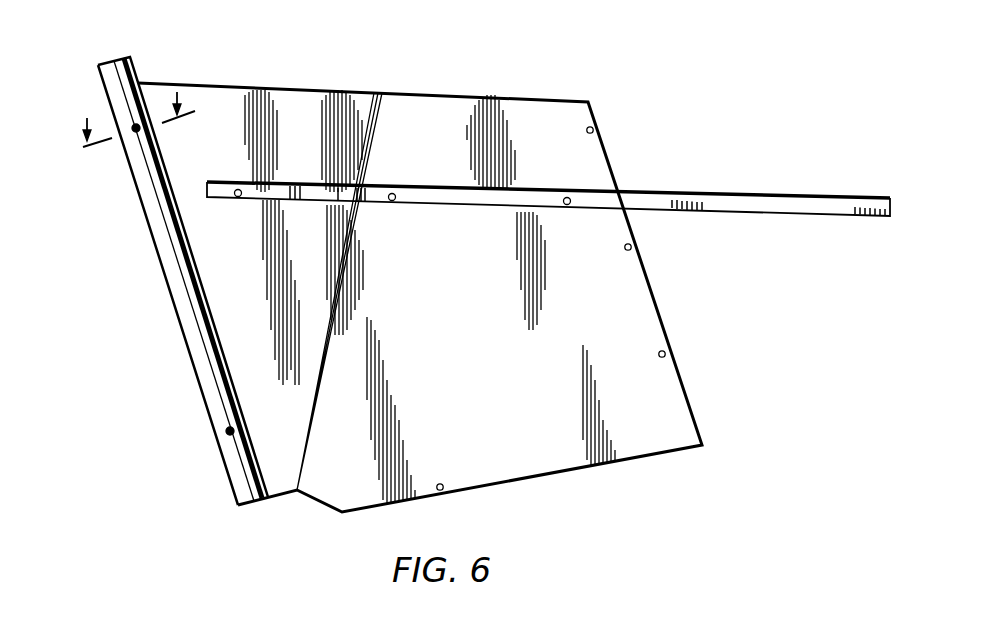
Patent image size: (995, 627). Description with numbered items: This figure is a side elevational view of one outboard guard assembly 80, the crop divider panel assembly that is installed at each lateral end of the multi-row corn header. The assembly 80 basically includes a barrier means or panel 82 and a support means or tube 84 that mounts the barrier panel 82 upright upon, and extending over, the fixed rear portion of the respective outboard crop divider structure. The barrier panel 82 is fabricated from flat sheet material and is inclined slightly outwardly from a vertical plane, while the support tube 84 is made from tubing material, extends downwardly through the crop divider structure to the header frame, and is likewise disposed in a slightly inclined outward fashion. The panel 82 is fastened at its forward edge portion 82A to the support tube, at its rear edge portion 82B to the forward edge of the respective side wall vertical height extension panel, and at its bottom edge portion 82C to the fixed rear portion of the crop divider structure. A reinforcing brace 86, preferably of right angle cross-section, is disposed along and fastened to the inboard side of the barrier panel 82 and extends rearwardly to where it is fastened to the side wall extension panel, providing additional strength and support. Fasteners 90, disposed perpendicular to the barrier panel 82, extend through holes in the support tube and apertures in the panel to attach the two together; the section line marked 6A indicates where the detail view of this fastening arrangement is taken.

The outboard guard assembly 80 is at (507, 88).
The barrier panel 82 is at (497, 338).
The forward edge portion 82A is at (265, 310).
The rear edge portion 82B is at (624, 311).
The bottom edge portion 82C is at (528, 461).
The support tube 84 is at (170, 297).
The reinforcing brace 86 is at (440, 204).
The fasteners 90 is at (139, 126).
The section line 6A is at (141, 130).